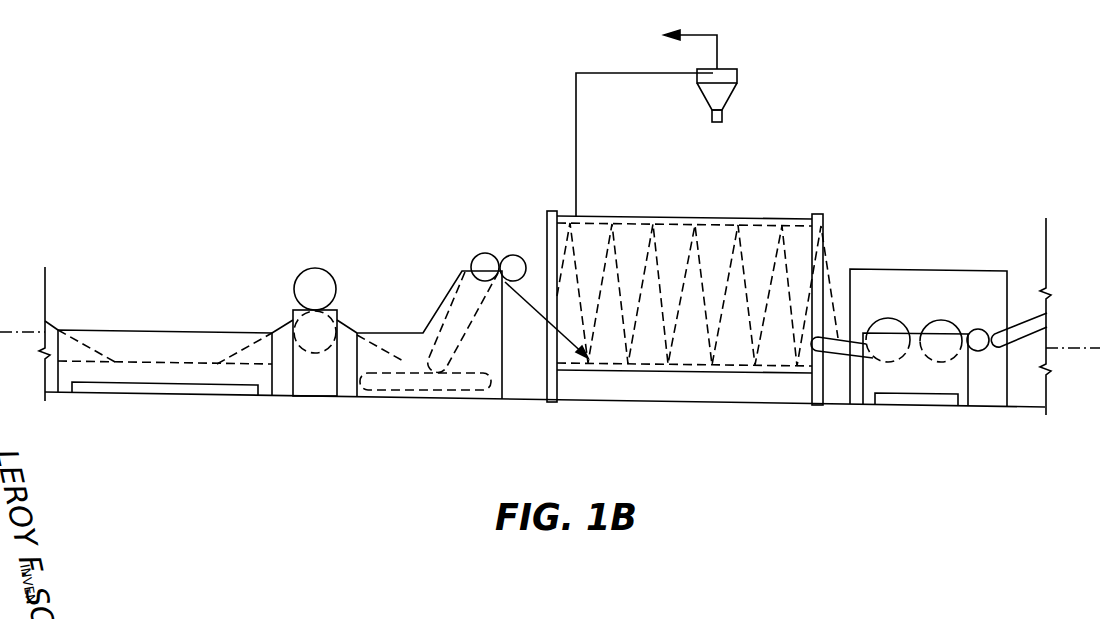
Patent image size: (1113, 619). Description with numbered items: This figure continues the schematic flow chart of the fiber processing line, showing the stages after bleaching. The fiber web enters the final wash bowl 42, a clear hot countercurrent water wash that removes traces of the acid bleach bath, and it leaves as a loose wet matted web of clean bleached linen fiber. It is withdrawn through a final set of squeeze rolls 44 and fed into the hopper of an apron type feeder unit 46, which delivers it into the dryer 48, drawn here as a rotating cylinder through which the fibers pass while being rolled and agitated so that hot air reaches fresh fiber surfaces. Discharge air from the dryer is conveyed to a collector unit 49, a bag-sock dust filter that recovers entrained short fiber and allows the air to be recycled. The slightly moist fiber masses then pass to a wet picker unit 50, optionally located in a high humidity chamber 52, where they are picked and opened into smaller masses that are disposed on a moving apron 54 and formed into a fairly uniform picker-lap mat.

The final wash bowl 42 is at (168, 329).
The squeeze rolls 44 is at (314, 268).
The apron type feeder unit 46 is at (402, 333).
The dryer 48 is at (675, 216).
The collector unit 49 is at (728, 95).
The wet picker unit 50 is at (895, 318).
The high humidity chamber 52 is at (954, 268).
The moving apron 54 is at (1028, 318).